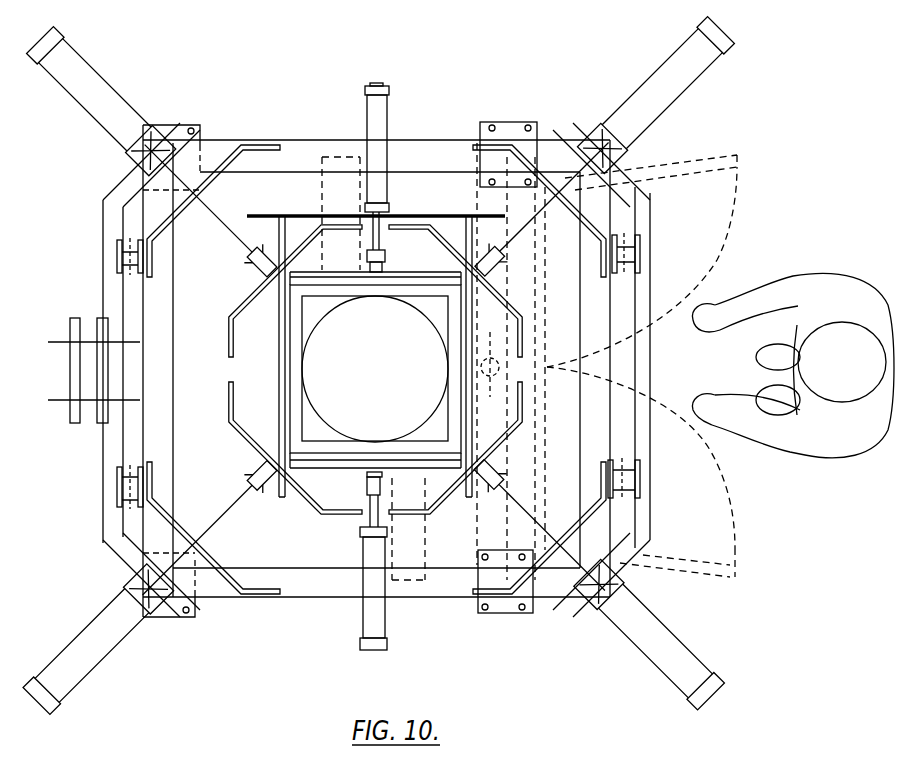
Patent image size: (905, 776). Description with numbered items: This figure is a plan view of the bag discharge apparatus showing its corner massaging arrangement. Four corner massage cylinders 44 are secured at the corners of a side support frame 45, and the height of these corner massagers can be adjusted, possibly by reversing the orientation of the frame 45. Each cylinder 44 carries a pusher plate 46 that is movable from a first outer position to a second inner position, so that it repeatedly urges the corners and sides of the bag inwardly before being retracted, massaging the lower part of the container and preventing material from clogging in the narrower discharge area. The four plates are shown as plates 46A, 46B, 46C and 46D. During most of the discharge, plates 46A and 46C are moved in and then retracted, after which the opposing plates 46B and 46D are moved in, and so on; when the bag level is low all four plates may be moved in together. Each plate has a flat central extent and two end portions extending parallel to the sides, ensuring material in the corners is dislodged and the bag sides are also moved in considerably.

The corner massage cylinder 44 is at (107, 95).
The side support frame 45 is at (107, 225).
The pusher plate 46 is at (240, 302).
The pusher plate 46A is at (222, 163).
The pusher plate 46B is at (603, 233).
The pusher plate 46C is at (513, 433).
The pusher plate 46D is at (232, 430).